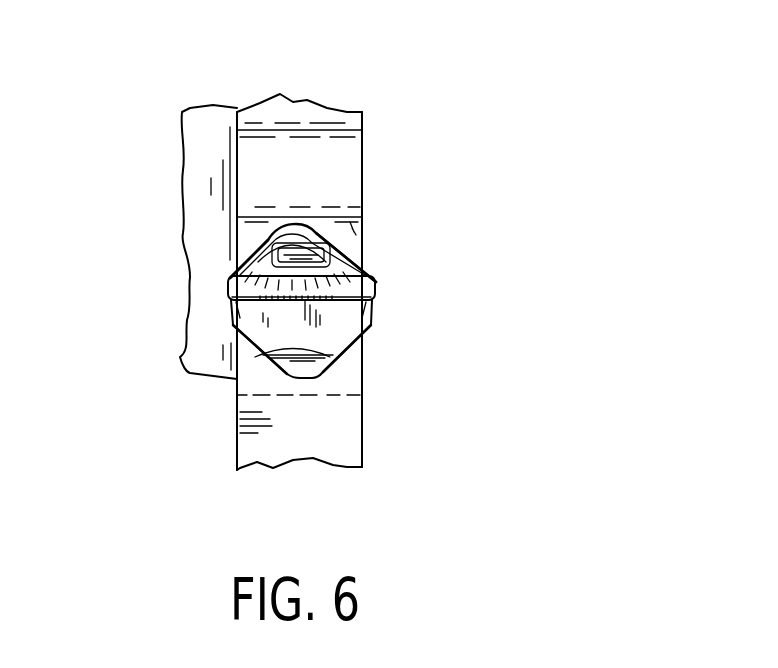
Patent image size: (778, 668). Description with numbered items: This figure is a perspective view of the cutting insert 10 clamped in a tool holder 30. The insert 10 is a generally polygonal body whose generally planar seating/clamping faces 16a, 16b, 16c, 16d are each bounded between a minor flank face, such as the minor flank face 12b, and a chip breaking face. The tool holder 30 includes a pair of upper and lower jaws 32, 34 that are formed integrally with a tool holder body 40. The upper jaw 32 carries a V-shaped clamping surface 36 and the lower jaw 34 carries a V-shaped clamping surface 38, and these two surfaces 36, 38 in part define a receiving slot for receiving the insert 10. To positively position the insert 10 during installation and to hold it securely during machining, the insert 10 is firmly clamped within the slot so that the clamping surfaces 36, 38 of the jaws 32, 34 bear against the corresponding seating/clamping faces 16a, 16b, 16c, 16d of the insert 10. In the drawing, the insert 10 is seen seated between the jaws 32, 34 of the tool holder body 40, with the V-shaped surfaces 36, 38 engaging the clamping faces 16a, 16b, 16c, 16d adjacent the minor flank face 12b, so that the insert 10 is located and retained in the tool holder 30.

The cutting insert 10 is at (297, 276).
The minor flank face 12b is at (297, 237).
The seating/clamping face 16a is at (355, 254).
The seating/clamping face 16b is at (347, 355).
The seating/clamping face 16c is at (268, 352).
The seating/clamping face 16d is at (257, 263).
The tool holder 30 is at (388, 156).
The upper jaw 32 is at (347, 185).
The lower jaw 34 is at (347, 443).
The V-shaped clamping surface 36 is at (277, 247).
The V-shaped clamping surface 38 is at (255, 358).
The tool holder body 40 is at (200, 272).